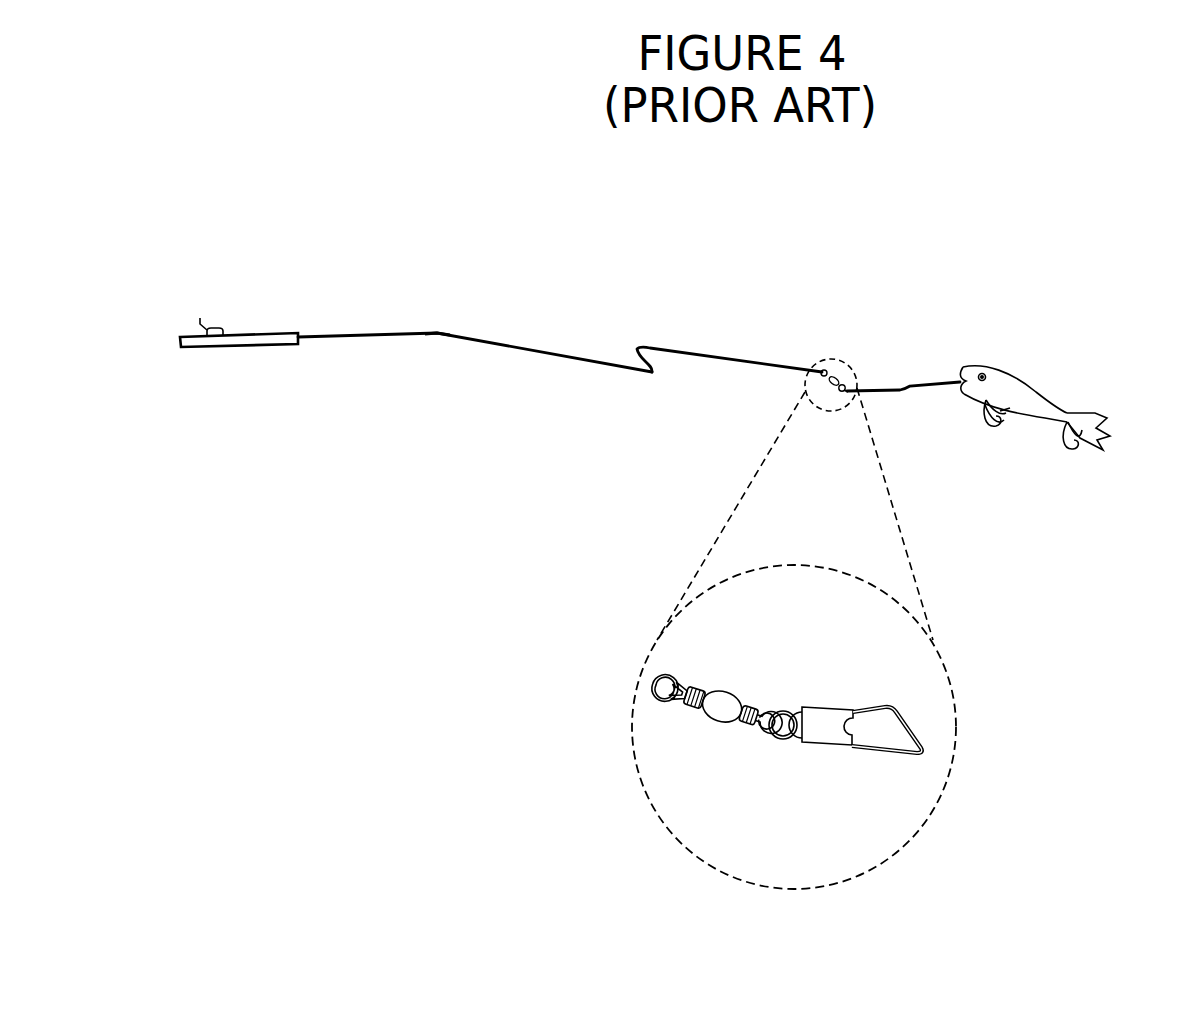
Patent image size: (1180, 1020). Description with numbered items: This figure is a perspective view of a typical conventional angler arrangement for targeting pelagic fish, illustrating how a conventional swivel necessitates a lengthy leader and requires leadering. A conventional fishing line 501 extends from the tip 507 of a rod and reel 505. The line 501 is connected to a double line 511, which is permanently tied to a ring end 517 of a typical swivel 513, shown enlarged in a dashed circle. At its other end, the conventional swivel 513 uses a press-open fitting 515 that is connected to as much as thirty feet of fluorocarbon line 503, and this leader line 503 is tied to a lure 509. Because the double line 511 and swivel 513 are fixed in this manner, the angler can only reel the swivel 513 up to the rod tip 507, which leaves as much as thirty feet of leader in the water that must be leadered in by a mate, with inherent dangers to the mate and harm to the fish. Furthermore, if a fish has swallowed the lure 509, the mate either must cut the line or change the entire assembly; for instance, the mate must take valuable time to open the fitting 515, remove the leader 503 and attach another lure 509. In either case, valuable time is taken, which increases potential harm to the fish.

The fishing line 501 is at (548, 355).
The fluorocarbon line 503 is at (905, 383).
The rod and reel 505 is at (261, 318).
The tip 507 is at (437, 333).
The lure 509 is at (1065, 452).
The double line 511 is at (722, 352).
The swivel 513 is at (835, 362).
The press-open fitting 515 is at (897, 755).
The ring end 517 is at (663, 703).